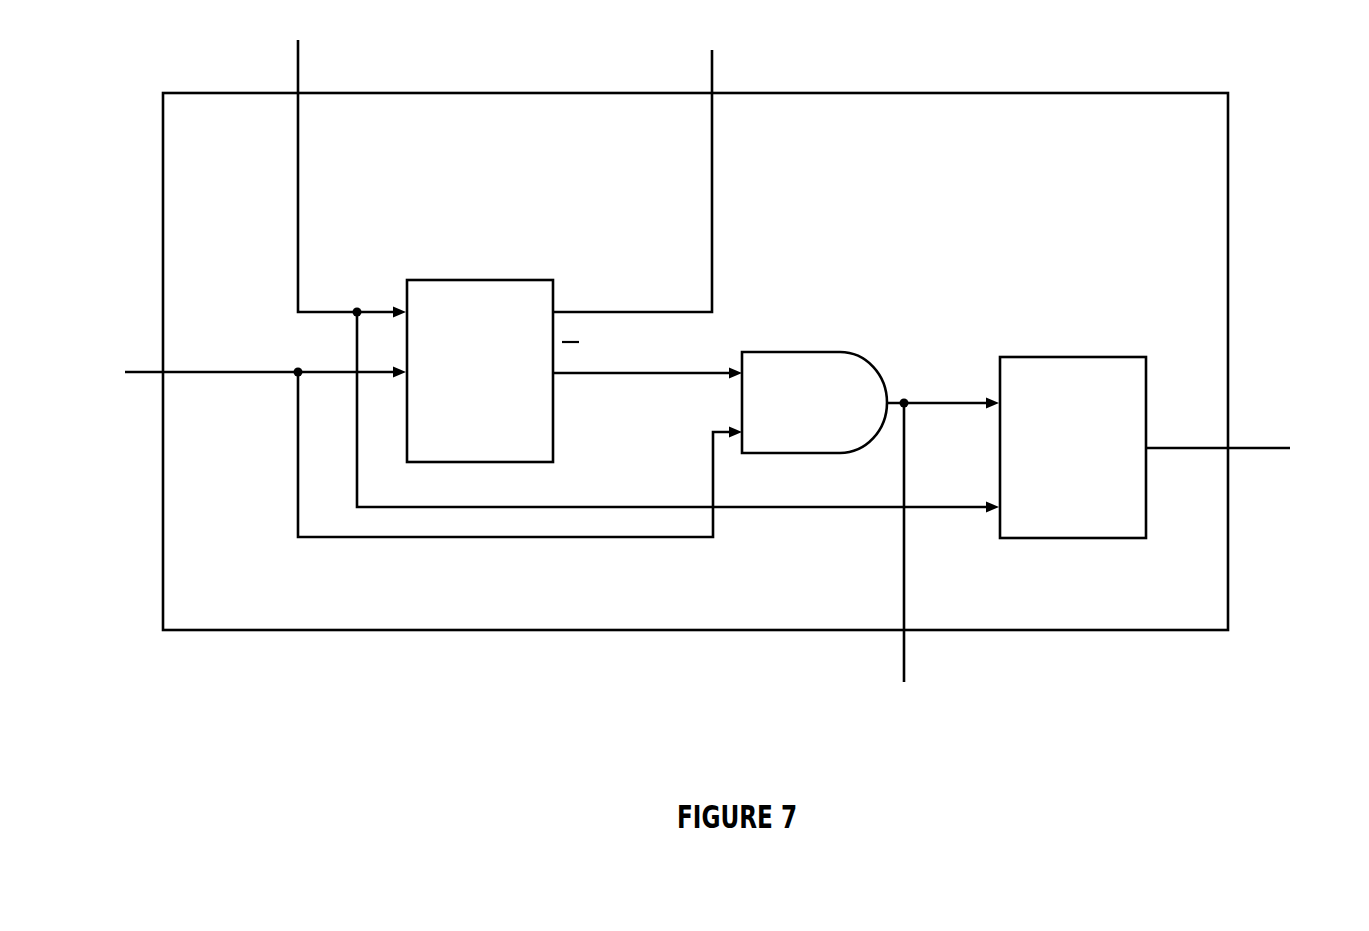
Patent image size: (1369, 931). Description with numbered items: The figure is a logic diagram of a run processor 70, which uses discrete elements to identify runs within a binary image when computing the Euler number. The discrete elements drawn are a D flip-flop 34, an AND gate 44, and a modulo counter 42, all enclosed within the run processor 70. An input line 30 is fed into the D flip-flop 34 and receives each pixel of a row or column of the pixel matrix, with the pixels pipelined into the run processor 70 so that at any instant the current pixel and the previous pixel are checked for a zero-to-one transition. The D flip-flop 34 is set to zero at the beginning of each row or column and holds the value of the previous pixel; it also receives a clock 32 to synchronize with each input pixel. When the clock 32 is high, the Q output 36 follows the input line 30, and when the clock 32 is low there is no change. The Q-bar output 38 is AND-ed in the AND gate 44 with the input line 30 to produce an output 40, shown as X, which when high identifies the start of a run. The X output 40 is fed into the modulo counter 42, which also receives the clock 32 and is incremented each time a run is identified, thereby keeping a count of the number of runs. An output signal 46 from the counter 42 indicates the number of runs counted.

The input line 30 is at (433, 434).
The clock 32 is at (648, 276).
The D flip-flop 34 is at (495, 353).
The Q output 36 is at (632, 181).
The Q-bar output 38 is at (647, 358).
The X output 40 is at (943, 524).
The modulo counter 42 is at (1088, 429).
The AND gate 44 is at (814, 384).
The output signal 46 is at (1234, 430).
The run processor 70 is at (957, 229).